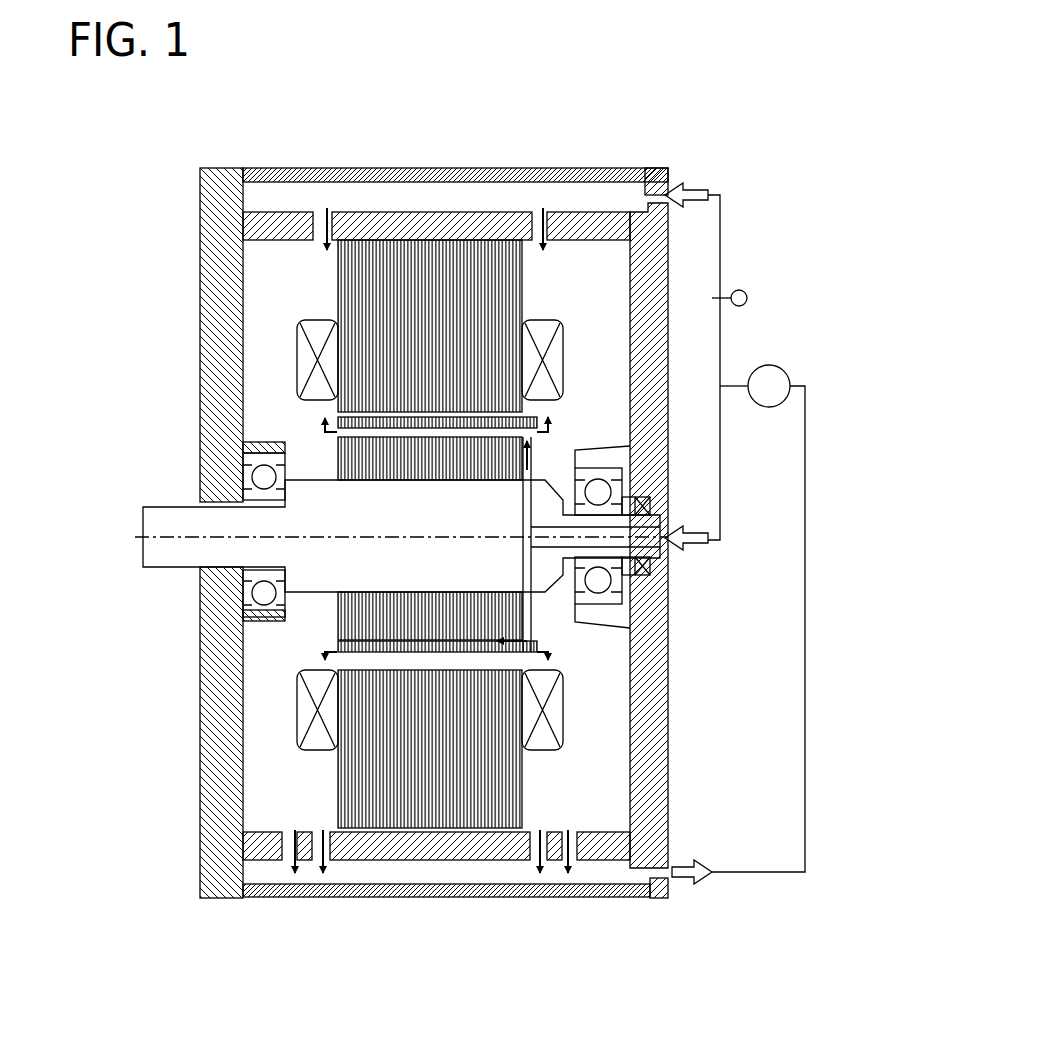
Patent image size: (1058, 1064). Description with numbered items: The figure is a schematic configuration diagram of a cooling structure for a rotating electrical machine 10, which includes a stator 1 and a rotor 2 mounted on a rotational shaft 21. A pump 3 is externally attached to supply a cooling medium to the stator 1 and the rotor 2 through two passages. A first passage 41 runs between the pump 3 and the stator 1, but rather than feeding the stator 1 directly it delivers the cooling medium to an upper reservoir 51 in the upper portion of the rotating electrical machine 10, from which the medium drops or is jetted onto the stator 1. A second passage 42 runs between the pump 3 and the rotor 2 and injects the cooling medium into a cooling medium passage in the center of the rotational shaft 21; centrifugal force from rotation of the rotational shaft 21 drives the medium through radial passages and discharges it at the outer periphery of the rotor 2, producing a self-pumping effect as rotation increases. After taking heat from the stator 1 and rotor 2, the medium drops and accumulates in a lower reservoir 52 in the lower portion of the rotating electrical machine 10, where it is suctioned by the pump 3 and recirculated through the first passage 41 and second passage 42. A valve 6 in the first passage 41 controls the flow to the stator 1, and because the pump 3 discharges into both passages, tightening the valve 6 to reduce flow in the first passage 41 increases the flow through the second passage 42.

The rotating electrical machine 10 is at (227, 121).
The stator 1 is at (368, 295).
The rotor 2 is at (347, 622).
The rotational shaft 21 is at (227, 531).
The pump 3 is at (781, 372).
The valve 6 is at (746, 296).
The first passage 41 is at (724, 199).
The second passage 42 is at (727, 480).
The upper reservoir 51 is at (563, 186).
The lower reservoir 52 is at (477, 877).